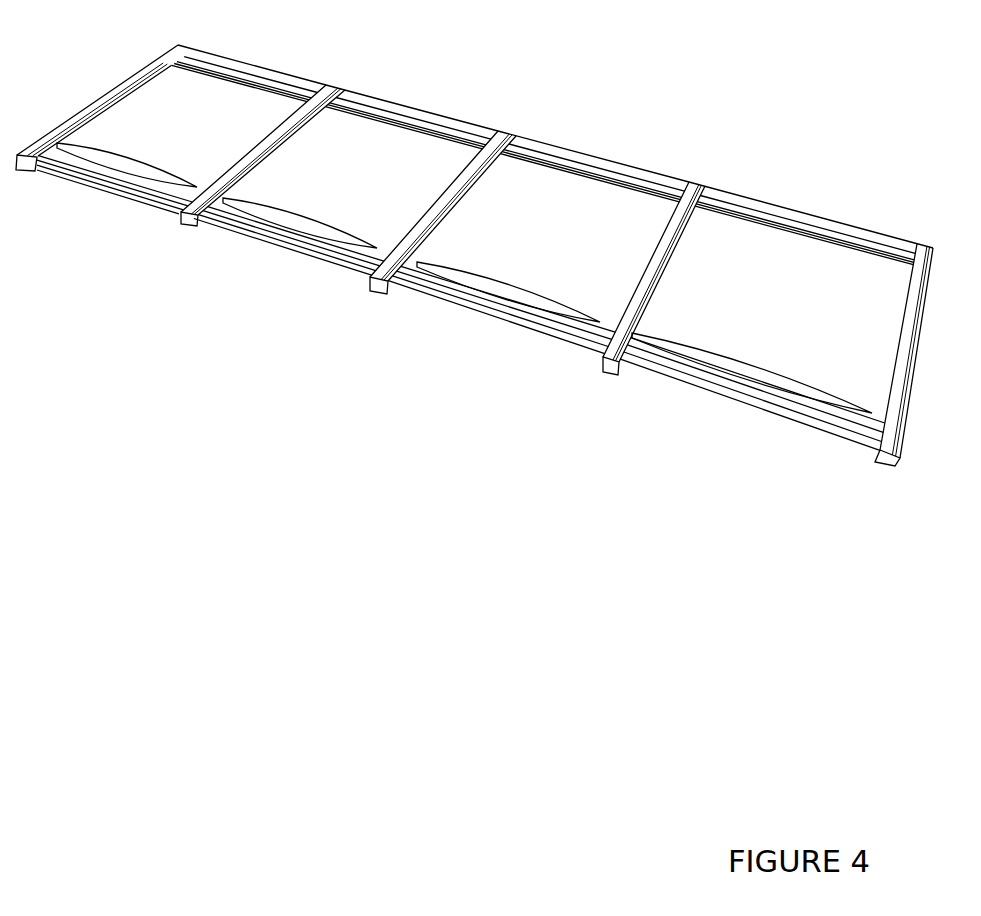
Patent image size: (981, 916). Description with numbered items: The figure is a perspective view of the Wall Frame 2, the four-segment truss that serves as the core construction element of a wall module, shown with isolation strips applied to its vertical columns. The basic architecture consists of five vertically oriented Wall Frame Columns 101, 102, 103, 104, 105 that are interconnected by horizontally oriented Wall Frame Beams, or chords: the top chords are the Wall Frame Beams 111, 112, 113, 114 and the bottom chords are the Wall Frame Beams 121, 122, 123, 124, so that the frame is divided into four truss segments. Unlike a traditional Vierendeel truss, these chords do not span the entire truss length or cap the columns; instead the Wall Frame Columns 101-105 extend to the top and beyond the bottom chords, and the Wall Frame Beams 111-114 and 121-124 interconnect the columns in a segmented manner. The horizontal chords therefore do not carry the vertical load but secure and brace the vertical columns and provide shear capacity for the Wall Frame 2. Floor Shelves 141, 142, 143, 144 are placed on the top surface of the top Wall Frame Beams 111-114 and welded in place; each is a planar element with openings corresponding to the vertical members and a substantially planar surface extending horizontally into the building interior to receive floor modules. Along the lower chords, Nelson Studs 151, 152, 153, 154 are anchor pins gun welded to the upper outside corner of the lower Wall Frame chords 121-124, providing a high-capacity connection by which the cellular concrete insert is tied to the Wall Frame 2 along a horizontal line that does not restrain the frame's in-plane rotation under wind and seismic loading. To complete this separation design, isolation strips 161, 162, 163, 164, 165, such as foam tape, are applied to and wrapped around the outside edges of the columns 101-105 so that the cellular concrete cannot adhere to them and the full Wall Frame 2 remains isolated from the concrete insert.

The Wall Frame 2 is at (333, 357).
The Wall Frame Column 101 is at (97, 108).
The Wall Frame Column 102 is at (263, 155).
The Wall Frame Column 103 is at (446, 212).
The Wall Frame Column 104 is at (668, 278).
The Wall Frame Column 105 is at (886, 355).
The Wall Frame Beam 111 is at (299, 93).
The Wall Frame Beam 112 is at (467, 140).
The Wall Frame Beam 113 is at (665, 194).
The Wall Frame Beam 114 is at (887, 256).
The Wall Frame Beam 121 is at (124, 196).
The Wall Frame Beam 122 is at (313, 263).
The Wall Frame Beam 123 is at (503, 323).
The Wall Frame Beam 124 is at (773, 418).
The Floor Shelf 141 is at (249, 76).
The Floor Shelf 142 is at (411, 119).
The Floor Shelf 143 is at (593, 173).
The Floor Shelf 144 is at (811, 231).
The Nelson Stud 151 is at (128, 156).
The Nelson Stud 152 is at (308, 216).
The Nelson Stud 153 is at (506, 281).
The Nelson Stud 154 is at (744, 363).
The isolation strip 161 is at (150, 84).
The isolation strip 162 is at (290, 127).
The isolation strip 163 is at (458, 183).
The isolation strip 164 is at (663, 251).
The isolation strip 165 is at (906, 313).